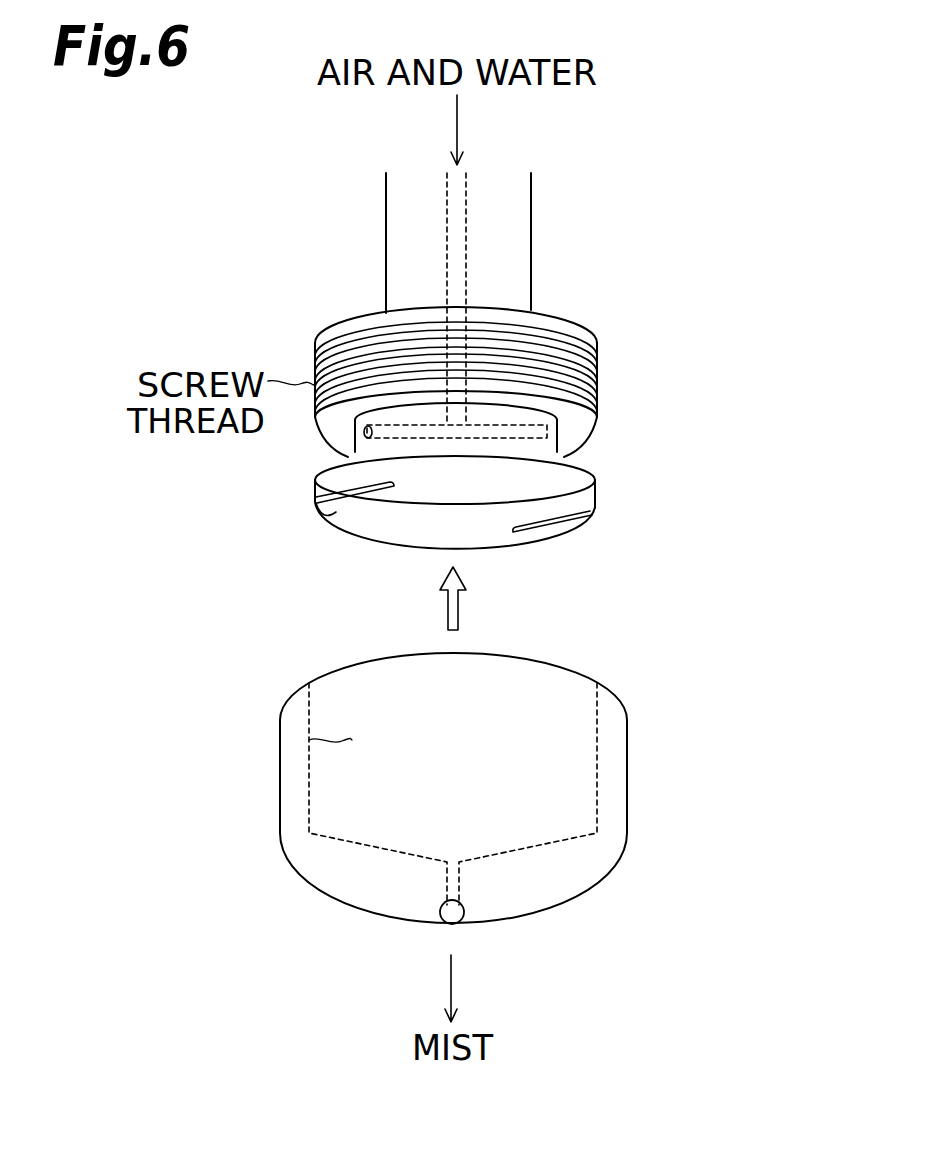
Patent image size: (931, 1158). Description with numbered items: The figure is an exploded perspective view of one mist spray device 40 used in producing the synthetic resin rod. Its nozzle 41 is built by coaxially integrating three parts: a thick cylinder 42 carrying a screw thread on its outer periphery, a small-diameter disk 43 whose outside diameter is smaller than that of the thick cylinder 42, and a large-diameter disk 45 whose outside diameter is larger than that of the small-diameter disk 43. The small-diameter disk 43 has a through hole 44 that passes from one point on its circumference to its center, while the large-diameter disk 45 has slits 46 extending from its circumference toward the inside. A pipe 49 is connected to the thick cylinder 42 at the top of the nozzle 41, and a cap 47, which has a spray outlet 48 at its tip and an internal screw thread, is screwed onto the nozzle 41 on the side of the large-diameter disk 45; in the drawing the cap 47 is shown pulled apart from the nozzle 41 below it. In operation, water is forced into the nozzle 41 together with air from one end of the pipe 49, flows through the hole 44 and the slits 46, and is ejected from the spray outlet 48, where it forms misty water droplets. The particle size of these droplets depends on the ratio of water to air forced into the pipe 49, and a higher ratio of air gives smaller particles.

The mist spray device 40 is at (770, 226).
The nozzle 41 is at (698, 343).
The thick cylinder 42 is at (597, 358).
The small-diameter disk 43 is at (558, 416).
The through hole 44 is at (348, 457).
The large-diameter disk 45 is at (596, 479).
The slits 46 is at (327, 507).
The cap 47 is at (627, 757).
The spray outlet 48 is at (452, 922).
The pipe 49 is at (531, 215).